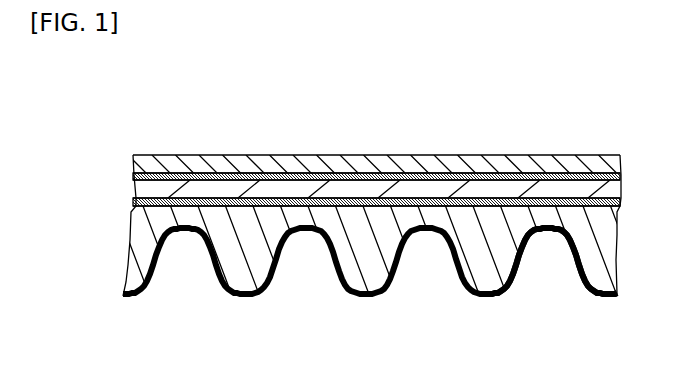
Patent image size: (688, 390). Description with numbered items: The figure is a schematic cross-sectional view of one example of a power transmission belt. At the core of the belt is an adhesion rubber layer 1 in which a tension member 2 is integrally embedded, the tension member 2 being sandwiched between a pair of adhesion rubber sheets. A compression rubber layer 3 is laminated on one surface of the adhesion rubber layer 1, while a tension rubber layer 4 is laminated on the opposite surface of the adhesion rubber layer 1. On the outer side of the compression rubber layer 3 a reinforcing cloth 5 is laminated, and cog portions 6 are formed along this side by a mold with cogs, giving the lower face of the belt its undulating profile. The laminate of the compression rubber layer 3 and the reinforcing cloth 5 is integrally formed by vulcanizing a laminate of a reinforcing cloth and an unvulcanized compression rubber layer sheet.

The adhesion rubber layer 1 is at (366, 225).
The tension member 2 is at (518, 185).
The compression rubber layer 3 is at (250, 252).
The tension rubber layer 4 is at (478, 108).
The reinforcing cloth 5 is at (388, 283).
The cog portions 6 is at (548, 289).